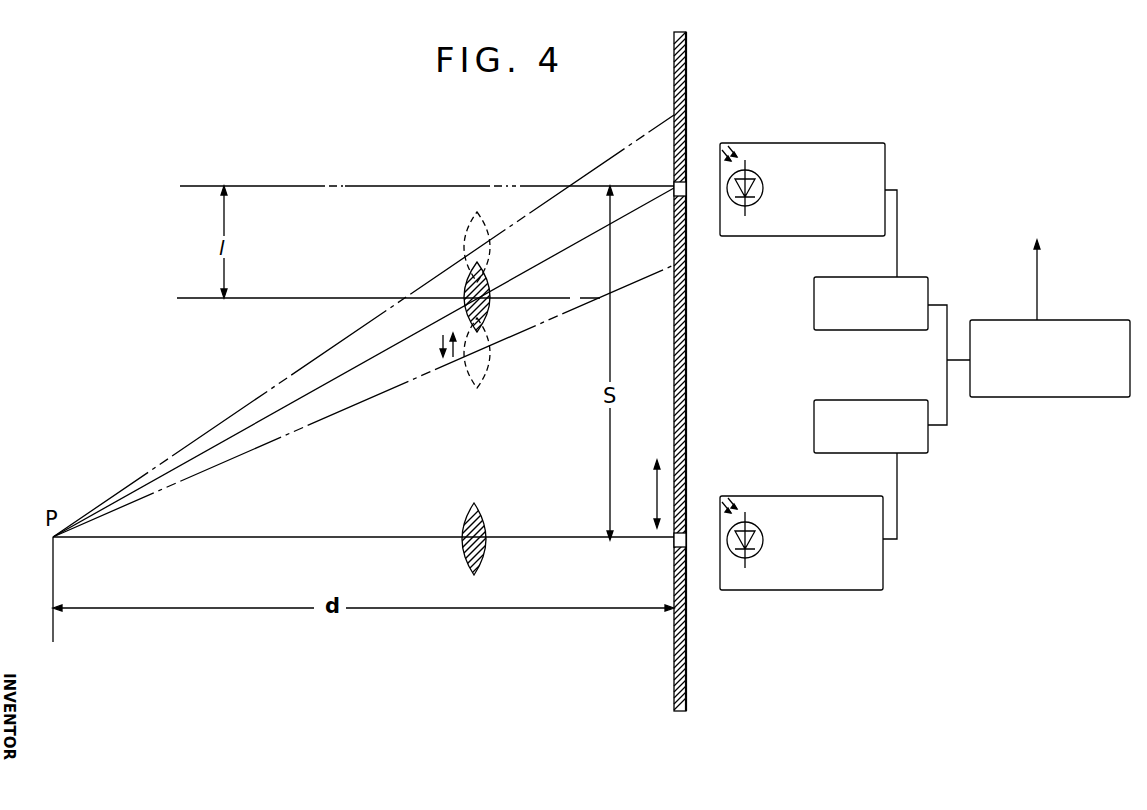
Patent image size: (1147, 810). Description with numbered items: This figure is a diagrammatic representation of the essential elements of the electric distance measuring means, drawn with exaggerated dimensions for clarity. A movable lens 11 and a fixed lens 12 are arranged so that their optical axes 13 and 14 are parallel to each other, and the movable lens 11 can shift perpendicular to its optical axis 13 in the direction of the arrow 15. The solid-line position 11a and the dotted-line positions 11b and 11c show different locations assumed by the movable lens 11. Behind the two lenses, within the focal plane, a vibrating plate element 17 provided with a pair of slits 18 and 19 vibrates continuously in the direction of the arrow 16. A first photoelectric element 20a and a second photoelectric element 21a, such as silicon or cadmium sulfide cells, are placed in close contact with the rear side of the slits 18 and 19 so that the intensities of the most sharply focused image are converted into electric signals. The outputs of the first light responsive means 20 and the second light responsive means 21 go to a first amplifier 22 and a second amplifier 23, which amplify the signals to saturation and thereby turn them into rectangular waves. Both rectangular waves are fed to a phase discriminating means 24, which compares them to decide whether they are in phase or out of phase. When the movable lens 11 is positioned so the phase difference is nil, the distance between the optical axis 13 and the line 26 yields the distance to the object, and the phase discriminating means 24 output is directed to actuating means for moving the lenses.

The movable lens 11 is at (488, 316).
The position of movable lens (solid line) 11a is at (488, 277).
The position of movable lens (dotted line) 11b is at (489, 353).
The position of movable lens (dotted line) 11c is at (490, 234).
The fixed lens 12 is at (486, 528).
The optical axis of movable lens 13 is at (304, 298).
The optical axis of fixed lens 14 is at (337, 522).
The arrow indicating lens movement direction 15 is at (435, 348).
The arrow indicating vibration direction 16 is at (657, 500).
The vibrating plate element 17 is at (701, 425).
The slit 18 is at (687, 189).
The slit 19 is at (687, 541).
The first light responsive means 20 is at (799, 189).
The first photoelectric element 20a is at (733, 200).
The second light responsive means 21 is at (791, 540).
The second photoelectric element 21a is at (733, 552).
The first amplifier 22 is at (921, 268).
The second amplifier 23 is at (888, 400).
The phase discriminating means 24 is at (1075, 320).
The reference line 26 is at (270, 186).